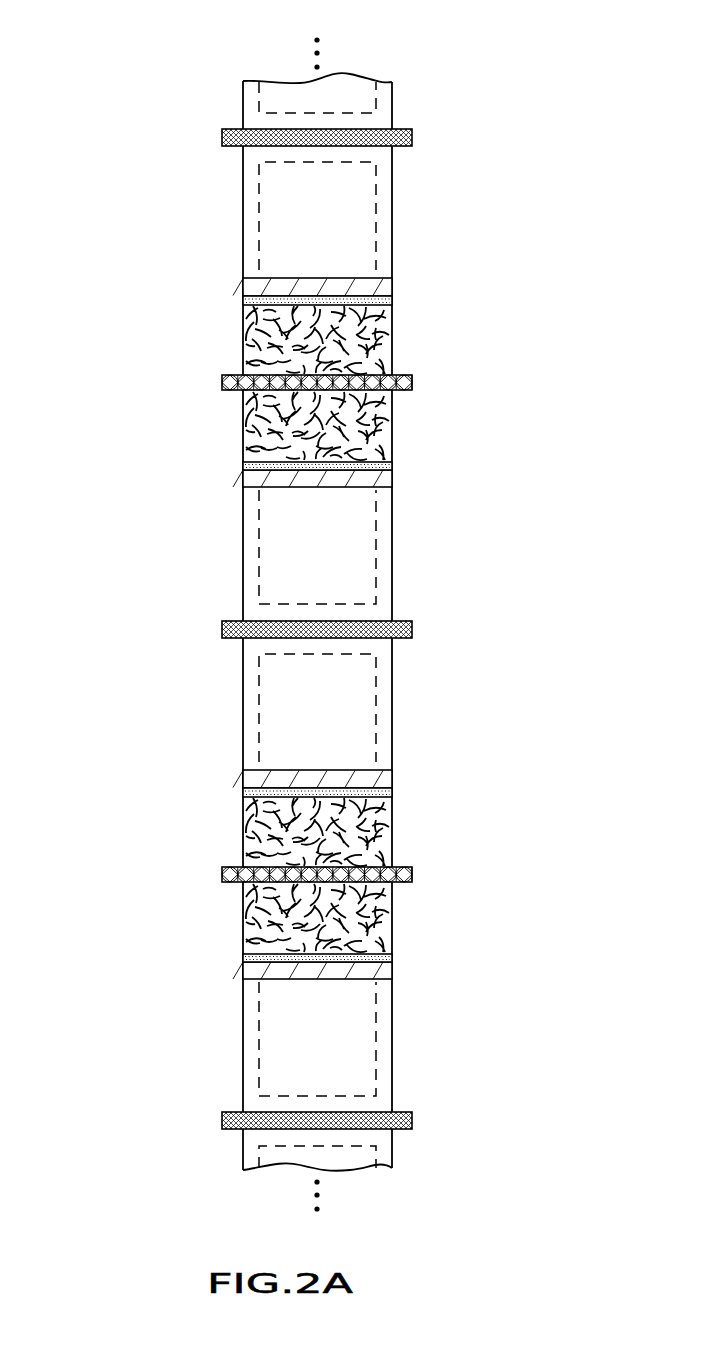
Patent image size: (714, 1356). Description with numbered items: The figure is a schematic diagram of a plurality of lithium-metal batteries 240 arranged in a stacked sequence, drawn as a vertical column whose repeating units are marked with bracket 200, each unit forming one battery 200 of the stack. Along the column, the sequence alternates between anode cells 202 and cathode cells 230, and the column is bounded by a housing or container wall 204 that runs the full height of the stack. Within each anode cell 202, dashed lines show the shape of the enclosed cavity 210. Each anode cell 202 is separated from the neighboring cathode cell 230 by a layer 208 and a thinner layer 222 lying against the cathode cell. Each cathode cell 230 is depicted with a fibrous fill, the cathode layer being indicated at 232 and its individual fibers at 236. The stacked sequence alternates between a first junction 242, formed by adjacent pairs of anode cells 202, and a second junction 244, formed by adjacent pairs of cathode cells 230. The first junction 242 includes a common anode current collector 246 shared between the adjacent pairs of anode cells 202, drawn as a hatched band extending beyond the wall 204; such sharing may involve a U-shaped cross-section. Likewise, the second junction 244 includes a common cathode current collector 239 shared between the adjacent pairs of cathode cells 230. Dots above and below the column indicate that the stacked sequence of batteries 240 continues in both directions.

The electrochemical cell unit 200 is at (70, 55).
The anode cell 202 is at (208, 145).
The cell housing wall 204 is at (392, 222).
The current collector layer 208 is at (392, 286).
The enclosed cavity 210 is at (334, 230).
The interface layer 222 is at (392, 299).
The cathode cell 230 is at (208, 55).
The separator layer 232 is at (392, 342).
The fibers 236 is at (382, 328).
The common cathode current collector 239 is at (412, 382).
The lithium-metal batteries 240 is at (556, 55).
The first junction 242 is at (186, 138).
The second junction 244 is at (186, 382).
The common anode current collector 246 is at (412, 138).